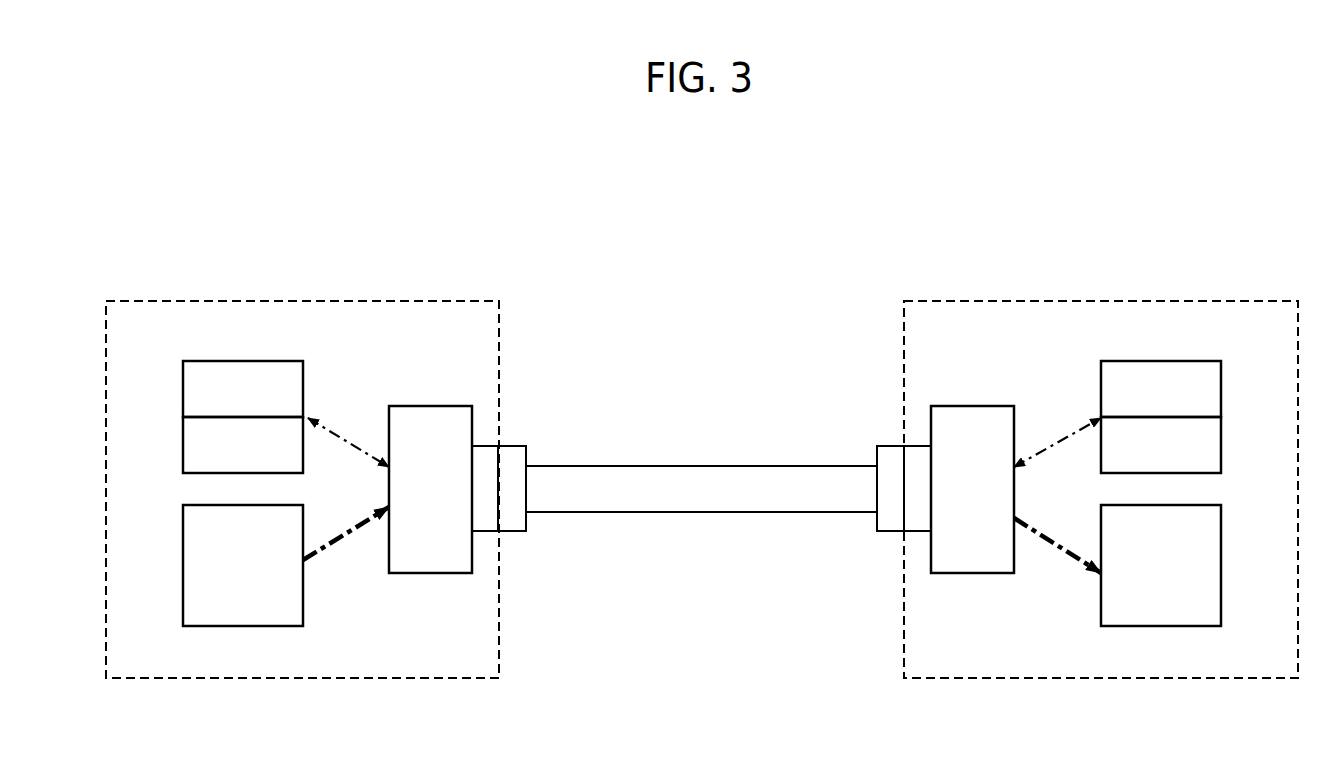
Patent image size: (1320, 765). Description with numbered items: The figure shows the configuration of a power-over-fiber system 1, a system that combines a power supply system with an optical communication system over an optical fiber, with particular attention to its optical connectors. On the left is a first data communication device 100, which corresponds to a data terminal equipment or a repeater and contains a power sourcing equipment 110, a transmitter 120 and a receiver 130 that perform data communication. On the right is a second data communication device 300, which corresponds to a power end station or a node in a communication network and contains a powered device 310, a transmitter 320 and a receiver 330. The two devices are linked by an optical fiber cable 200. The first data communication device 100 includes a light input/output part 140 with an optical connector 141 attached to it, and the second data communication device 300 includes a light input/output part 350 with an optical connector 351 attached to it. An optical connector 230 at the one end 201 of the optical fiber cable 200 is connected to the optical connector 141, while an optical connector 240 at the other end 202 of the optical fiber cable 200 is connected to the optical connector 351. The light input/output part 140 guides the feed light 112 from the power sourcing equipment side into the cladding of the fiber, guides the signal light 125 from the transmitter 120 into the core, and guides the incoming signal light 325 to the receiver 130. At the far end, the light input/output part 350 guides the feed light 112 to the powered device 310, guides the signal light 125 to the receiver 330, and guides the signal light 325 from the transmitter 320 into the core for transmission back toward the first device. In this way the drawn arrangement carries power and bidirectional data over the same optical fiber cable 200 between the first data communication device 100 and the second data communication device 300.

The power-over-fiber system 1 is at (783, 237).
The first data communication device 100 is at (343, 302).
The power sourcing equipment 110 is at (183, 537).
The feed light 112 is at (340, 540).
The transmitter 120 is at (183, 390).
The signal light 125 is at (330, 428).
The receiver 130 is at (183, 447).
The light input/output part 140 is at (433, 406).
The optical connector 141 is at (485, 523).
The optical fiber cable 200 is at (707, 452).
The one end 201 is at (530, 522).
The other end 202 is at (872, 522).
The optical connector 230 is at (512, 523).
The optical connector 240 is at (890, 523).
The second data communication device 300 is at (1027, 302).
The powered device 310 is at (1221, 537).
The transmitter 320 is at (1221, 447).
The signal light 325 is at (1070, 428).
The receiver 330 is at (1221, 390).
The light input/output part 350 is at (972, 404).
The optical connector 351 is at (917, 523).